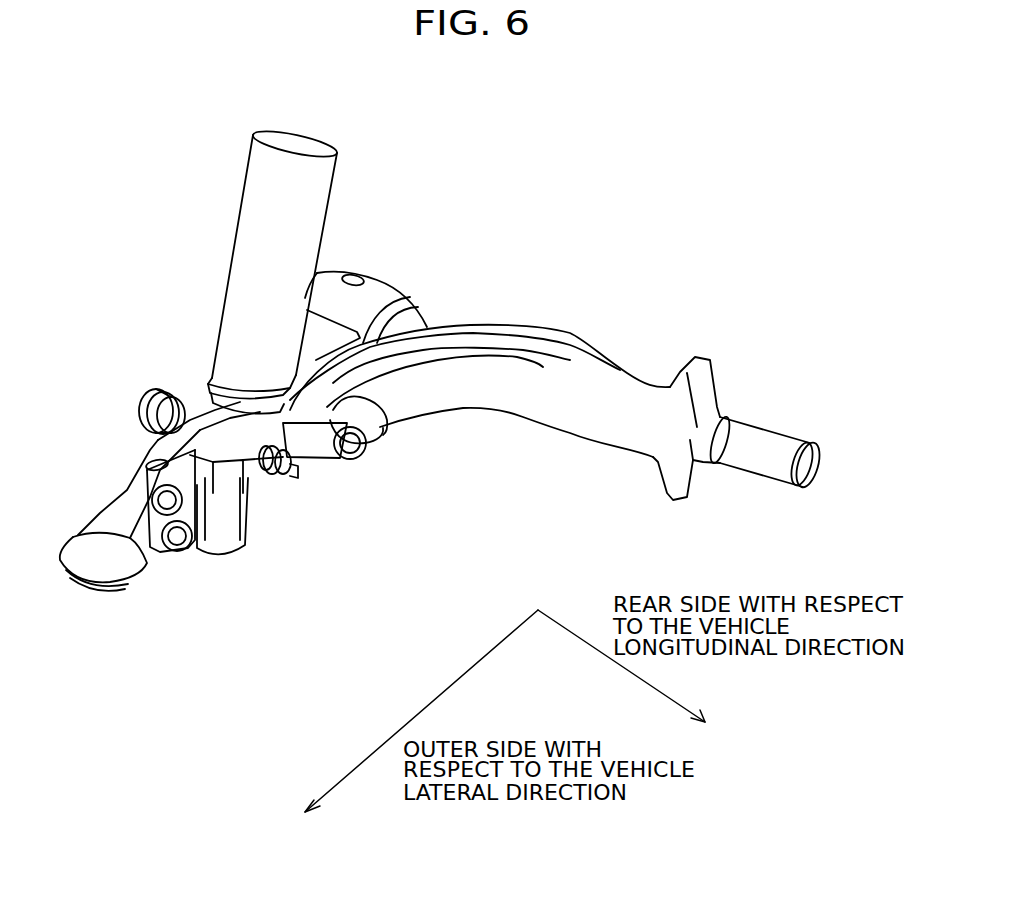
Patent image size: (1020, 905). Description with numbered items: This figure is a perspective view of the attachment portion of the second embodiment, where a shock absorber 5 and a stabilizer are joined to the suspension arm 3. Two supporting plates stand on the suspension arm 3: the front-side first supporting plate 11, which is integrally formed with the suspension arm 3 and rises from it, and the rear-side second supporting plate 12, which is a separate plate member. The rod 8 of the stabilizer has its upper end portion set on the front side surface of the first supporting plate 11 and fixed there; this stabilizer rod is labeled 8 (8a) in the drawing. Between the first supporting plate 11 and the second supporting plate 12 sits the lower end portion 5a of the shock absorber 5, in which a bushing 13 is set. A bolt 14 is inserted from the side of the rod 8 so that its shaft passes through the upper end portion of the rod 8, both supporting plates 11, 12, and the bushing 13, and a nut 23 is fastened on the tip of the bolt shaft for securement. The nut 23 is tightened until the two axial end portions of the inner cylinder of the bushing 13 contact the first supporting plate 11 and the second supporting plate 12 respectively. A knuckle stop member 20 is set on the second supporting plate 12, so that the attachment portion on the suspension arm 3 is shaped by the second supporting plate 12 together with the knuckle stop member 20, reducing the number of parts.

The suspension arm 3 is at (485, 387).
The shock absorber 5 is at (250, 217).
The lower end portion of shock absorber 5a is at (210, 383).
The rod of stabilizer 8 is at (116, 401).
The rubber bushing 8a is at (140, 407).
The first supporting plate 11 is at (150, 445).
The second supporting plate 12 is at (313, 443).
The bushing 13 is at (143, 453).
The bolt 14 is at (300, 472).
The knuckle stop member 20 is at (228, 537).
The nut 23 is at (277, 477).